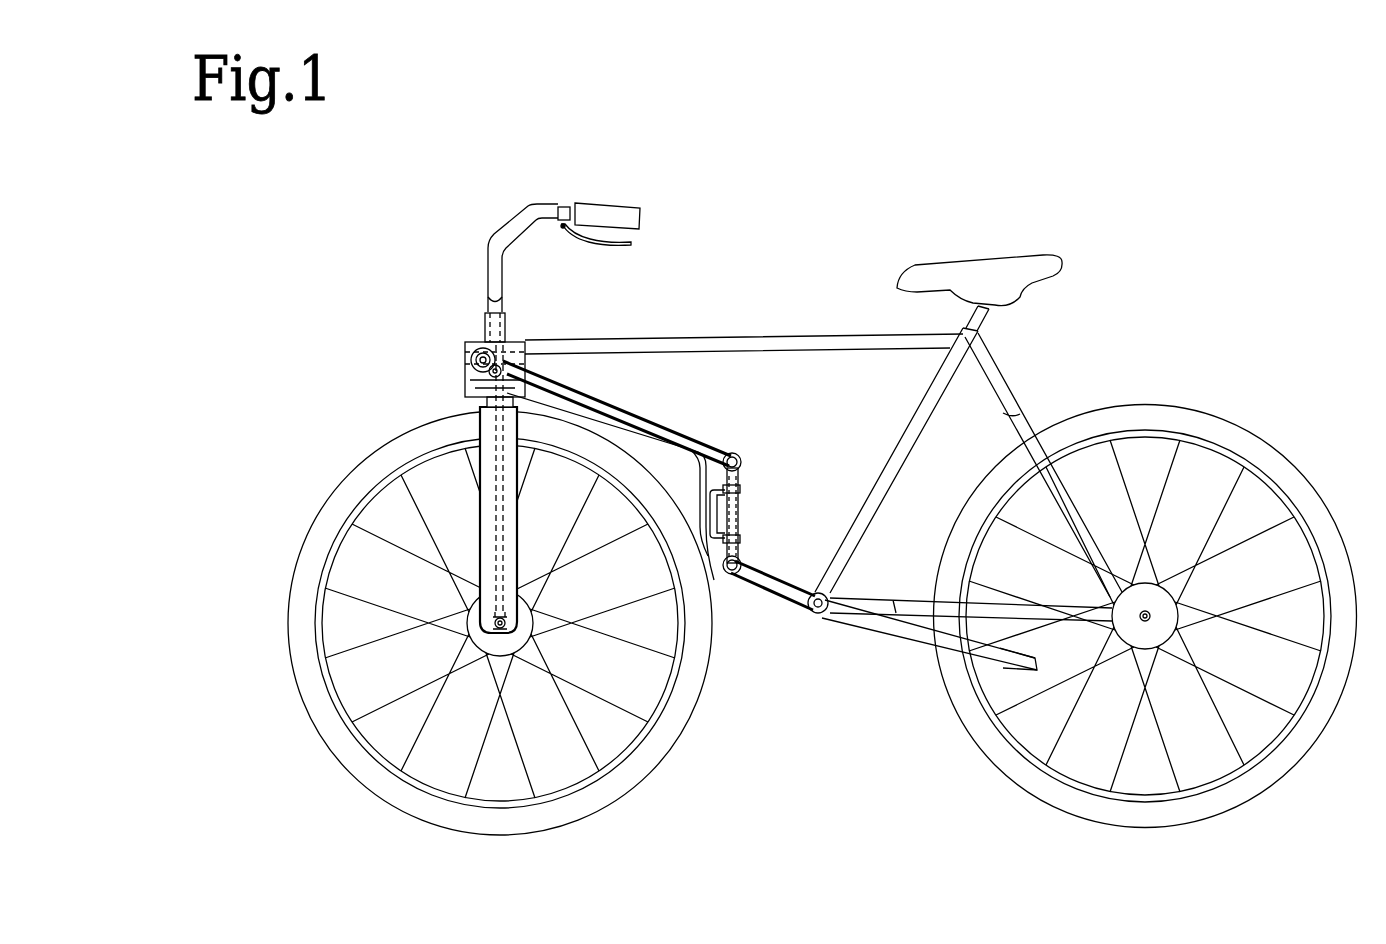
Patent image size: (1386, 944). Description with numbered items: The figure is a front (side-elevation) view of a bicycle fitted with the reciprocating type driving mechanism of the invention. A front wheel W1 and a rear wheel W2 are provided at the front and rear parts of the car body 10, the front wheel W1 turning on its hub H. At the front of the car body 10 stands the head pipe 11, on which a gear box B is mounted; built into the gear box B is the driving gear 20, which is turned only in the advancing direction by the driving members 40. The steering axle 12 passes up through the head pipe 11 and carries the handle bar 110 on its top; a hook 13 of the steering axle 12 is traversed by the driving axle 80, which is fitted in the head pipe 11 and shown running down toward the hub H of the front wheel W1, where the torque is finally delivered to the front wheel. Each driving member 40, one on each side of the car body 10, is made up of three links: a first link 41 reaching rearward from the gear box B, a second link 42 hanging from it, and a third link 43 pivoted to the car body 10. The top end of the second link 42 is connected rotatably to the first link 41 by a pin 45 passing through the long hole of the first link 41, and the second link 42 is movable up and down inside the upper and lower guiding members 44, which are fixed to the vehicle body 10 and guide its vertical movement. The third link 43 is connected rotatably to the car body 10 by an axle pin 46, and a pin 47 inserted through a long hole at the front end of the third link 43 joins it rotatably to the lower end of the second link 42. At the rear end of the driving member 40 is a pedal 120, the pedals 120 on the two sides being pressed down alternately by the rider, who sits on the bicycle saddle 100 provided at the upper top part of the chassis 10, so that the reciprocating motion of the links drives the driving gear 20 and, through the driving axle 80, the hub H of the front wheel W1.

The car body 10 is at (822, 341).
The head pipe 11 is at (487, 323).
The steering axle 12 is at (497, 300).
The hook 13 is at (492, 531).
The driving gear 20 is at (466, 352).
The gear box B is at (465, 372).
The driving member 40 is at (756, 468).
The first link 41 is at (663, 430).
The second link 42 is at (740, 515).
The third link 43 is at (885, 636).
The guiding member 44 is at (742, 488).
The pin 45 is at (735, 455).
The axle pin 46 is at (818, 613).
The pin 47 is at (733, 577).
The driving axle 80 is at (492, 510).
The bicycle saddle 100 is at (1000, 265).
The handle bar 110 is at (608, 215).
The pedal 120 is at (1001, 664).
The hub H is at (514, 640).
The front wheel W1 is at (337, 752).
The rear wheel W2 is at (1081, 812).